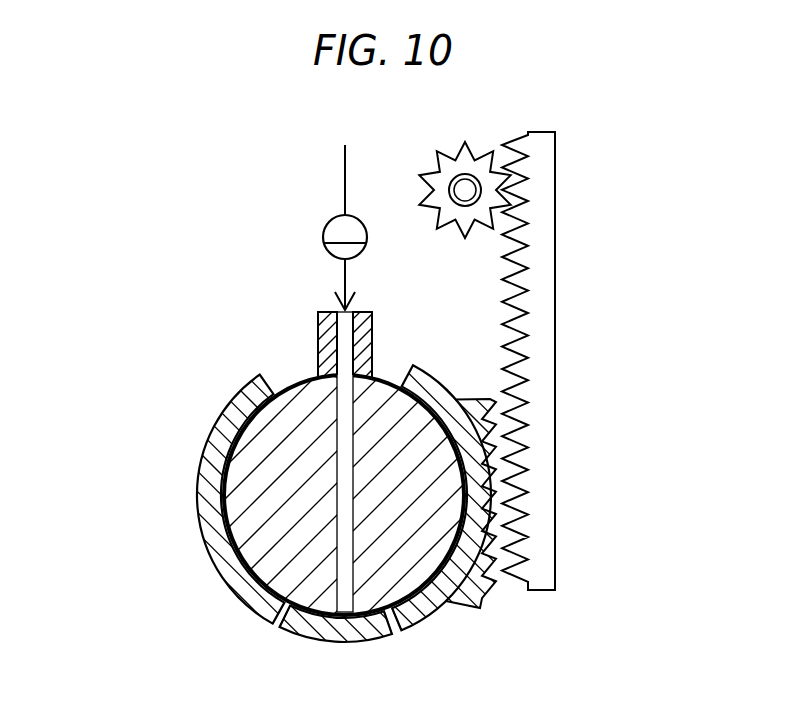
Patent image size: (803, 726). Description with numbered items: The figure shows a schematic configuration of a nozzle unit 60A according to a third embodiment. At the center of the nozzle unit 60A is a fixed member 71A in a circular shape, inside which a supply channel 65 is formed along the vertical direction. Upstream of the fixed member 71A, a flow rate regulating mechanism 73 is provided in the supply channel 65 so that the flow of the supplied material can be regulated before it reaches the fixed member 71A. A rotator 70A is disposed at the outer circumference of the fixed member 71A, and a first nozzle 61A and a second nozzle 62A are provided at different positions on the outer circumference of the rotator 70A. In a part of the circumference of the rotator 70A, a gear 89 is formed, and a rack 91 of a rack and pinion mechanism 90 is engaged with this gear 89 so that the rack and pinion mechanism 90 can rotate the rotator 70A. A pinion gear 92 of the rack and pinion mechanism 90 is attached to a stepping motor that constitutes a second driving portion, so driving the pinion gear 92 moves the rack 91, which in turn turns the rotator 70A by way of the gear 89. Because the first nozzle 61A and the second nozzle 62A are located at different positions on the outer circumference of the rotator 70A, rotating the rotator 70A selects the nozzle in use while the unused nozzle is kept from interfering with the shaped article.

The nozzle unit 60A is at (101, 216).
The supply channel 65 is at (345, 176).
The flow rate regulating mechanism 73 is at (324, 228).
The rotator 70A is at (217, 443).
The fixed member 71A is at (242, 515).
The first nozzle 61A is at (283, 634).
The second nozzle 62A is at (394, 634).
The gear 89 is at (481, 398).
The rack and pinion mechanism 90 is at (615, 372).
The rack 91 is at (538, 591).
The pinion gear 92 is at (446, 158).